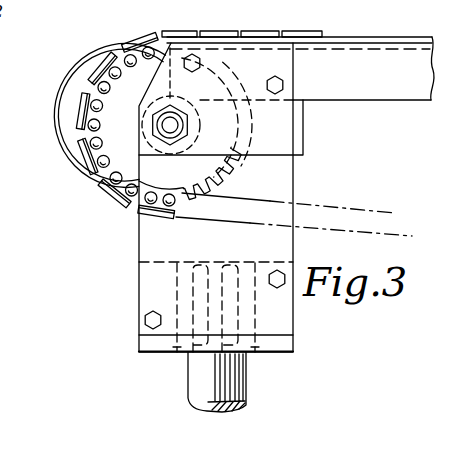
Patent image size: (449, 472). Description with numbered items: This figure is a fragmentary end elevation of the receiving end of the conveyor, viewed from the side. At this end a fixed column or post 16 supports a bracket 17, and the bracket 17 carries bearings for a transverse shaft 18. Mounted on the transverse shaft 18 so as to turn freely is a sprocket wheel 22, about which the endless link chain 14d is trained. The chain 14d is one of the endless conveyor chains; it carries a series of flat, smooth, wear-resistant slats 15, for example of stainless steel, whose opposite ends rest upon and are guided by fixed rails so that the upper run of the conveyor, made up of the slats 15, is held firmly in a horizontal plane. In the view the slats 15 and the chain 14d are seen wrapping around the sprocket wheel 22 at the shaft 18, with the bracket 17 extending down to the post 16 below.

The endless link chain 14d is at (140, 198).
The slats 15 is at (76, 128).
The column or post 16 is at (197, 388).
The bracket 17 is at (147, 248).
The transverse shaft 18 is at (171, 128).
The sprocket wheel 22 is at (130, 150).